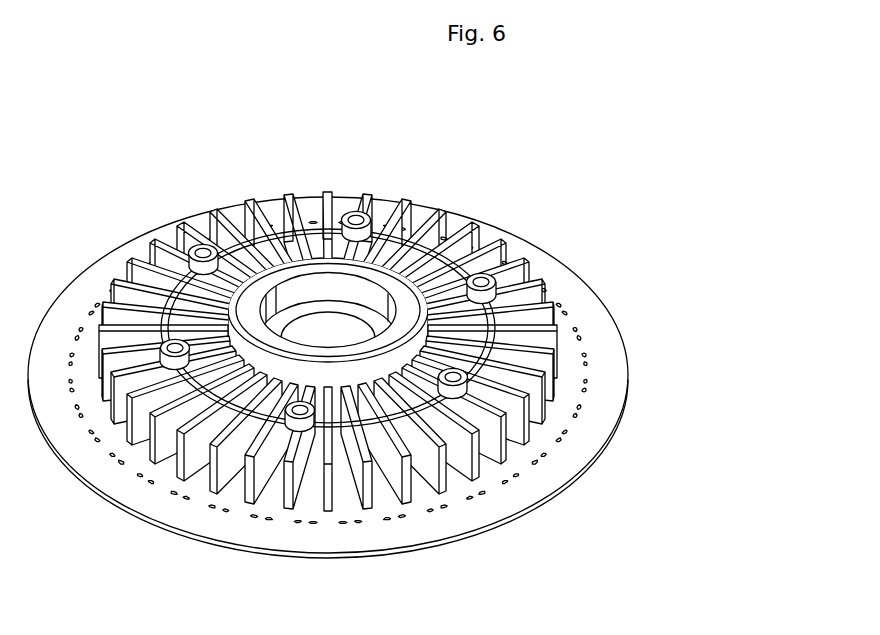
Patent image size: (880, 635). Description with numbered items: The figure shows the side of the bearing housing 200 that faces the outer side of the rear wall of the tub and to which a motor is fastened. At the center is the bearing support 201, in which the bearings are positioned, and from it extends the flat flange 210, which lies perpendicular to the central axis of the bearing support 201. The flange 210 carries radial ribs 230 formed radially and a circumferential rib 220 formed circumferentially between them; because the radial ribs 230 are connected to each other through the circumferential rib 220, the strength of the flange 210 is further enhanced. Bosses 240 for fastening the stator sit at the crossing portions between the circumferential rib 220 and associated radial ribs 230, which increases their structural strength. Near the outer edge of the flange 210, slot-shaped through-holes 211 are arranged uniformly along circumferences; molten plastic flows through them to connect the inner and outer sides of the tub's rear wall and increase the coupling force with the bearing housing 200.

The bearing housing 200 is at (479, 205).
The bearing support 201 is at (305, 262).
The flange 210 is at (488, 505).
The through-holes 211 is at (185, 499).
The circumferential rib 220 is at (345, 467).
The radial ribs 230 is at (196, 296).
The bosses 240 is at (309, 437).